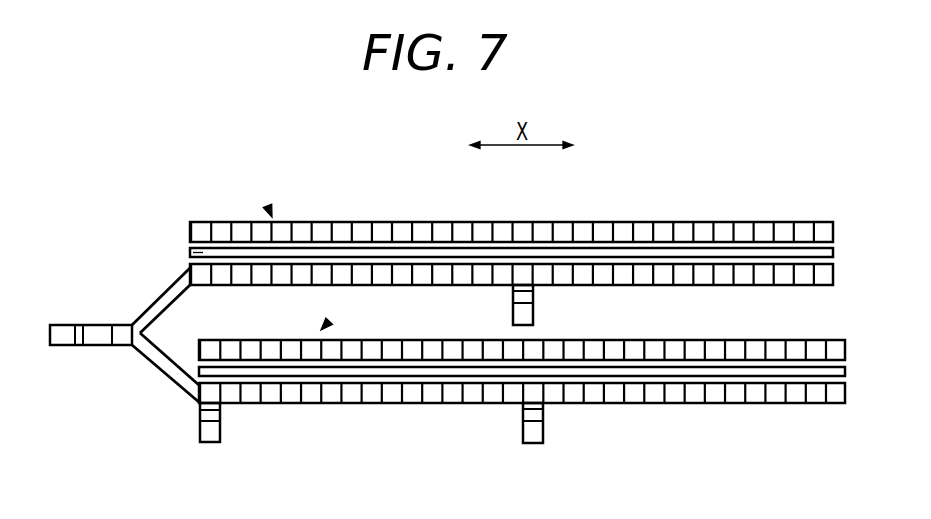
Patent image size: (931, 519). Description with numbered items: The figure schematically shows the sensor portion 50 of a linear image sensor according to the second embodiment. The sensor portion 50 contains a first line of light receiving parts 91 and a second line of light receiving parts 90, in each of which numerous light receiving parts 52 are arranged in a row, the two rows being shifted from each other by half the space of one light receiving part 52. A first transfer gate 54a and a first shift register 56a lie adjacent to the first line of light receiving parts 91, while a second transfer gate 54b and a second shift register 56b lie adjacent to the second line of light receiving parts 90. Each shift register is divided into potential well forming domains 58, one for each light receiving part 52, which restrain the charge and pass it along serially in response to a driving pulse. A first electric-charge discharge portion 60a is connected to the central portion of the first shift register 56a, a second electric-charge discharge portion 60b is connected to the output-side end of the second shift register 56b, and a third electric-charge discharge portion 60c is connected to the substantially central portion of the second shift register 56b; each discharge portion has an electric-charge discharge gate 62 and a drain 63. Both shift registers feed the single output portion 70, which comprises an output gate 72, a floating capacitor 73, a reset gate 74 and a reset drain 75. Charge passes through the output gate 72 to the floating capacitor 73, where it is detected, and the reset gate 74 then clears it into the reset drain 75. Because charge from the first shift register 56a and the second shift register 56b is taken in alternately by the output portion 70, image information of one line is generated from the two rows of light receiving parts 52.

The sensor portion 50 is at (816, 203).
The light receiving parts 52 is at (198, 232).
The first transfer gate 54a is at (192, 252).
The second transfer gate 54b is at (200, 372).
The first shift register 56a is at (261, 298).
The second shift register 56b is at (311, 421).
The potential well forming domains 58 is at (197, 275).
The first electric-charge discharge portion 60a is at (460, 297).
The second electric-charge discharge portion 60b is at (145, 412).
The third electric-charge discharge portion 60c is at (470, 410).
The electric-charge discharge gate 62 is at (513, 298).
The drain 63 is at (513, 315).
The output portion 70 is at (152, 280).
The output gate 72 is at (125, 328).
The floating capacitor 73 is at (97, 330).
The reset gate 74 is at (80, 328).
The reset drain 75 is at (63, 332).
The second line of light receiving parts 90 is at (329, 321).
The first line of light receiving parts 91 is at (268, 206).